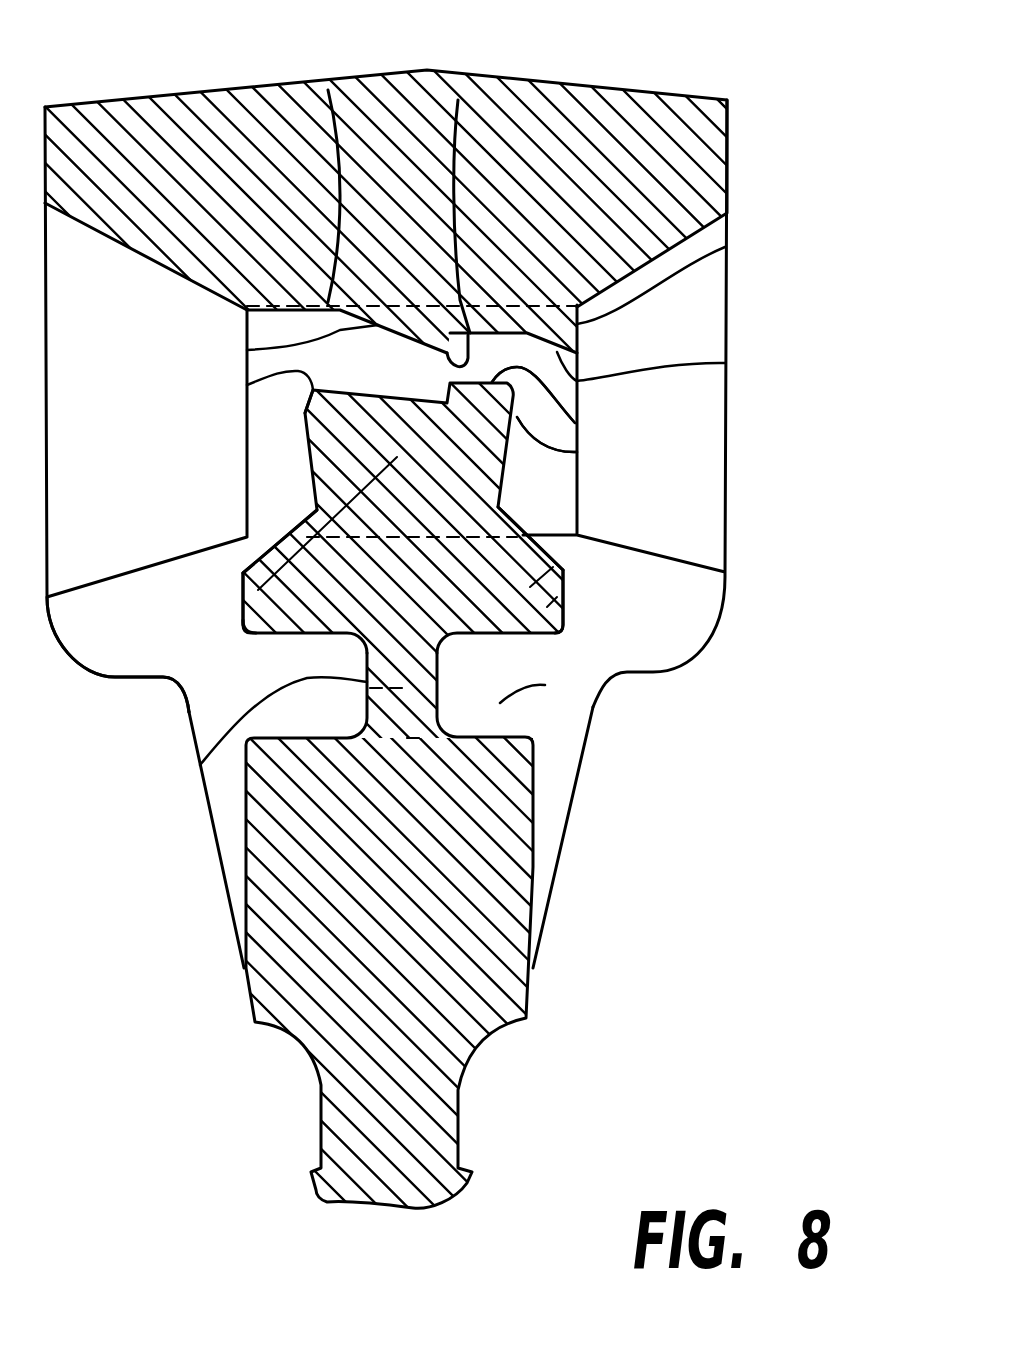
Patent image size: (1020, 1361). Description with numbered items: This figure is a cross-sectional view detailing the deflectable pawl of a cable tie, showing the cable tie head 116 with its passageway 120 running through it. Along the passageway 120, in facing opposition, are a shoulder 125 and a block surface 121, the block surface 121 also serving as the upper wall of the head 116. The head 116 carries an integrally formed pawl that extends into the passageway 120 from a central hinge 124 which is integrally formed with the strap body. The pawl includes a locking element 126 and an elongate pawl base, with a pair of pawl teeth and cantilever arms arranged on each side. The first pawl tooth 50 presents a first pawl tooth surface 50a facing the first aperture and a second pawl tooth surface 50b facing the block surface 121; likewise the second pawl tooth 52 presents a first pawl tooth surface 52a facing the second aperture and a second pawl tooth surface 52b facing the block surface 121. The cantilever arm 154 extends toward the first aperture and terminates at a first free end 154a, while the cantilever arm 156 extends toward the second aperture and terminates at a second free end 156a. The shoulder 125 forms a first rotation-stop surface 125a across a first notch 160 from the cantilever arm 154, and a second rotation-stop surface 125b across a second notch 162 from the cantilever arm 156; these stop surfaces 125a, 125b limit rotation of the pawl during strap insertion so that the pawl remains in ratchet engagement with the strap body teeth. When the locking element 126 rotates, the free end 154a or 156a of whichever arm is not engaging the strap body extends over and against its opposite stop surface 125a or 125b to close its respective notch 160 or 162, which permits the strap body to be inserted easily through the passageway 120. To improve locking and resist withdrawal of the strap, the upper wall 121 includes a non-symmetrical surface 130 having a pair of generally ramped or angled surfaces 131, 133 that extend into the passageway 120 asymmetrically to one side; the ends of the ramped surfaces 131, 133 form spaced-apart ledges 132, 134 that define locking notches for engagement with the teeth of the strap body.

The cable tie head 116 is at (647, 133).
The passageway 120 is at (653, 343).
The block surface 121 is at (328, 90).
The non-symmetrical surface 130 is at (458, 100).
The ramped surface 131 is at (247, 350).
The ledge 132 is at (452, 368).
The ramped surface 133 is at (725, 363).
The ledge 134 is at (725, 247).
The first pawl tooth 50 is at (330, 430).
The first pawl tooth surface 50a is at (305, 413).
The second pawl tooth surface 50b is at (287, 376).
The second pawl tooth 52 is at (667, 385).
The first pawl tooth surface 52a is at (577, 452).
The second pawl tooth surface 52b is at (563, 410).
The locking element 126 is at (243, 573).
The cantilever arm 154 is at (243, 597).
The first free end 154a is at (253, 628).
The cantilever arm 156 is at (530, 587).
The second free end 156a is at (562, 620).
The first notch 160 is at (197, 740).
The second notch 162 is at (545, 685).
The central hinge 124 is at (283, 663).
The shoulder 125 is at (526, 1018).
The first rotation-stop surface 125a is at (270, 730).
The second rotation-stop surface 125b is at (517, 733).